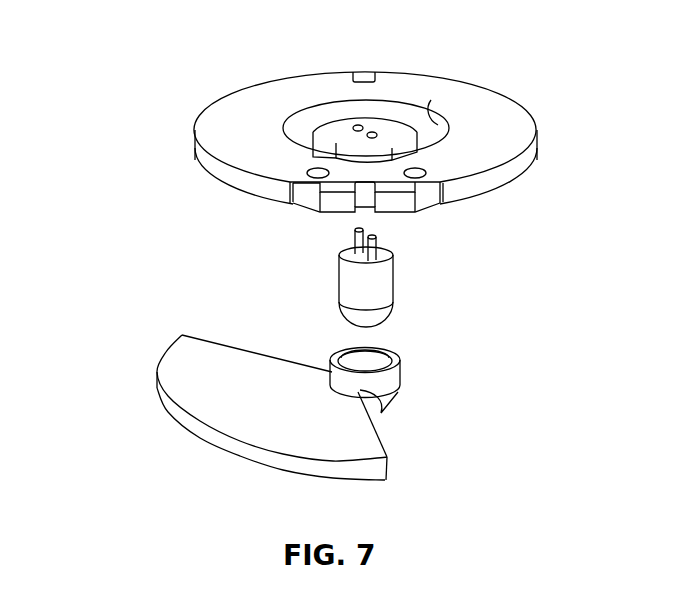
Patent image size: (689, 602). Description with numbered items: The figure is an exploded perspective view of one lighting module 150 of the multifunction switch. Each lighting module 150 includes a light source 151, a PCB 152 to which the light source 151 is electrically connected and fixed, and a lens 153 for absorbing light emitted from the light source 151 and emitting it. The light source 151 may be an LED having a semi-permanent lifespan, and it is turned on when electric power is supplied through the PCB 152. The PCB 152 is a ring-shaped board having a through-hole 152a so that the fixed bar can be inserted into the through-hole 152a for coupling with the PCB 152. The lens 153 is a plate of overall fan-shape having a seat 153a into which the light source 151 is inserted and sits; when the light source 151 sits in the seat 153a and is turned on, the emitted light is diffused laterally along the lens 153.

The lighting module 150 is at (198, 235).
The light source 151 is at (388, 283).
The PCB 152 is at (527, 170).
The through-hole 152a is at (431, 100).
The lens 153 is at (187, 418).
The seat 153a is at (378, 363).